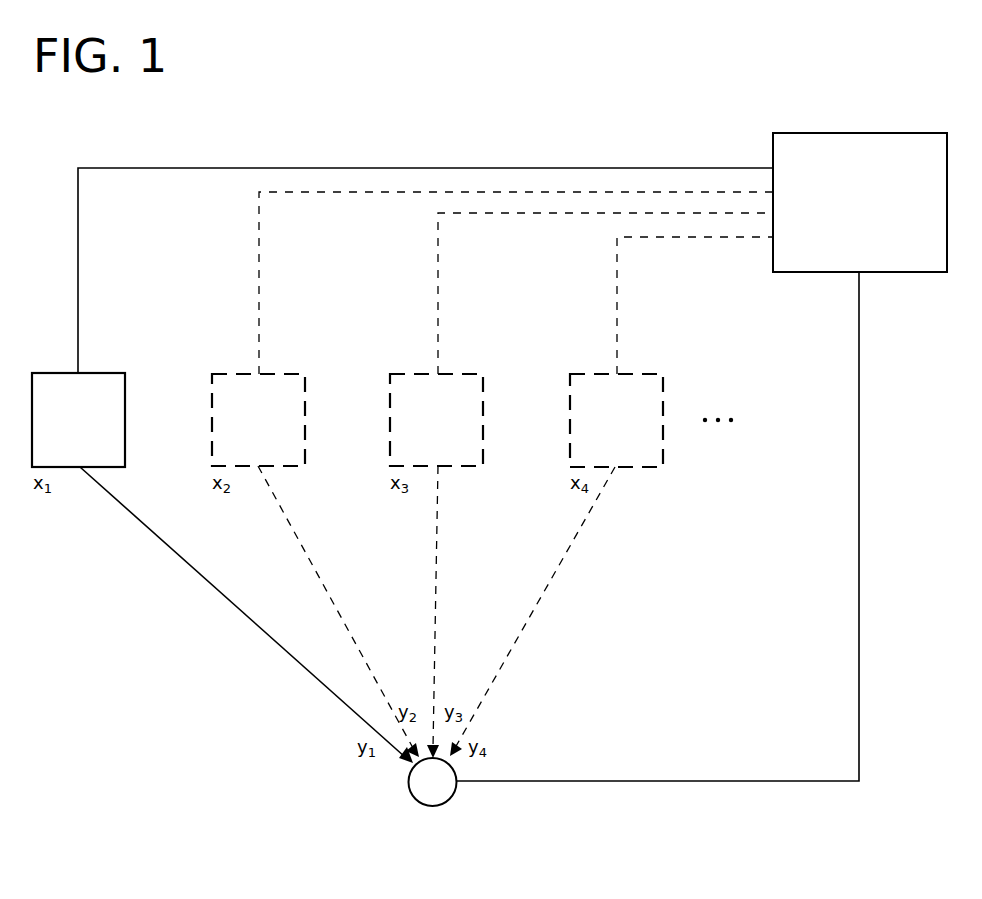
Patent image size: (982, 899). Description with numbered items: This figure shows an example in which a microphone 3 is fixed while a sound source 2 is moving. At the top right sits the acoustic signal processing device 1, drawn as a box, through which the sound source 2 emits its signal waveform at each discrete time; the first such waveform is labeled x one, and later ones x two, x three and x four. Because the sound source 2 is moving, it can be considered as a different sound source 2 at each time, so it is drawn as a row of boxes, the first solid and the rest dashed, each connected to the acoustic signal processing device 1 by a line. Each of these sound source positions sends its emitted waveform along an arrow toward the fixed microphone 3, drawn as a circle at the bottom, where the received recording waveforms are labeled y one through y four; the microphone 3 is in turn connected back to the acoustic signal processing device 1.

The acoustic signal processing device 1 is at (884, 133).
The sound source 2 is at (92, 373).
The microphone 3 is at (433, 806).